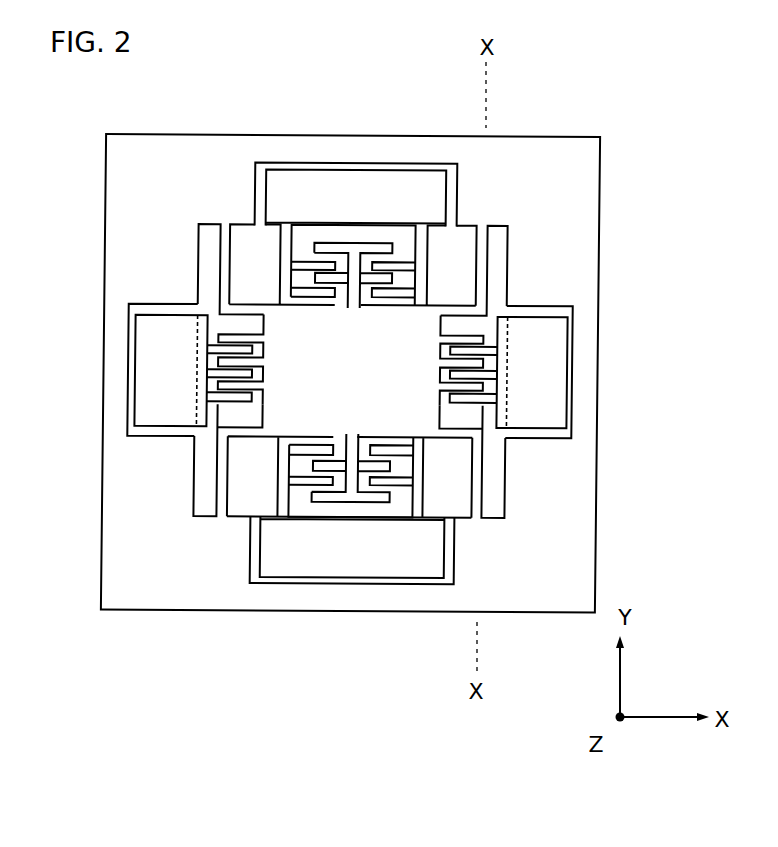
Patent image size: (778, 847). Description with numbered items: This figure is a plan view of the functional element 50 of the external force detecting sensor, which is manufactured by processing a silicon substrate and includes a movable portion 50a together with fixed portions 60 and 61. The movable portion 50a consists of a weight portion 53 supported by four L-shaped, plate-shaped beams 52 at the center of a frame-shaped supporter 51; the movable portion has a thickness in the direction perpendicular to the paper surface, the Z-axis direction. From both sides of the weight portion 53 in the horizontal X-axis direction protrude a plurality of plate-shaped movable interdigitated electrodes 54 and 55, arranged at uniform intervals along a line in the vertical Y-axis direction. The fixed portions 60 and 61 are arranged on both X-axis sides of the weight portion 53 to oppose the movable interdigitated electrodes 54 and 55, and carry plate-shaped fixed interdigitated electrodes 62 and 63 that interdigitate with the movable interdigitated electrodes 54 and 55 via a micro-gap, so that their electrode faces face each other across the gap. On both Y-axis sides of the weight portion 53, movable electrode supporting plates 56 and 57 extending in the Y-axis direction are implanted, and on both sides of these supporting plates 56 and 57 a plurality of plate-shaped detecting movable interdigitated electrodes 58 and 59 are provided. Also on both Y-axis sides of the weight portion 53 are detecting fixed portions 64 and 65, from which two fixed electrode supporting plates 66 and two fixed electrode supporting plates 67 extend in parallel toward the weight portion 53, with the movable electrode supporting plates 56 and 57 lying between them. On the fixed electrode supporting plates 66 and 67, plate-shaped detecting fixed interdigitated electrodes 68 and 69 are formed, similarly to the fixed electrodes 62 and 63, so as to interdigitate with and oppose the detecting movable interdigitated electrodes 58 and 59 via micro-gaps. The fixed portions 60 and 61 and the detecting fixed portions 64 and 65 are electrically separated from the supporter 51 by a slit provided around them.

The functional element 50 is at (620, 282).
The movable portion 50a is at (442, 300).
The supporter 51 is at (592, 545).
The beams 52 is at (350, 371).
The weight portion 53 is at (230, 373).
The movable interdigitated electrodes 54 is at (469, 361).
The movable interdigitated electrodes 55 is at (239, 415).
The movable electrode supporting plate 56 is at (353, 267).
The movable electrode supporting plate 57 is at (350, 476).
The detecting movable interdigitated electrodes 58 is at (353, 275).
The detecting movable interdigitated electrodes 59 is at (351, 468).
The fixed portion 60 is at (534, 372).
The fixed portion 61 is at (167, 370).
The fixed interdigitated electrodes 62 is at (460, 417).
The fixed interdigitated electrodes 63 is at (241, 359).
The detecting fixed portion 64 is at (356, 194).
The detecting fixed portion 65 is at (352, 550).
The fixed electrode supporting plates 66 is at (352, 264).
The fixed electrode supporting plates 67 is at (349, 476).
The detecting fixed interdigitated electrodes 68 is at (313, 279).
The detecting fixed interdigitated electrodes 69 is at (311, 465).